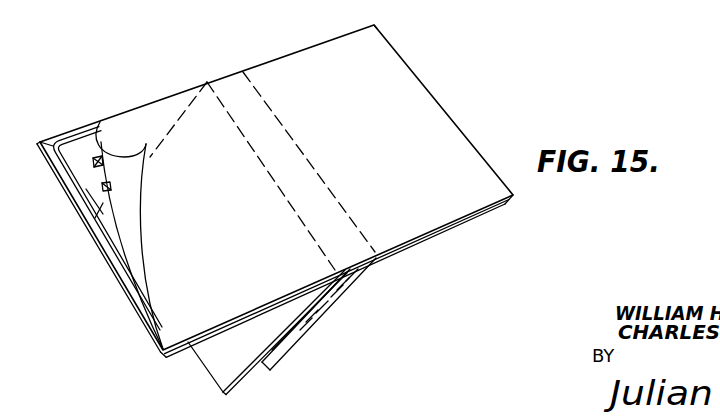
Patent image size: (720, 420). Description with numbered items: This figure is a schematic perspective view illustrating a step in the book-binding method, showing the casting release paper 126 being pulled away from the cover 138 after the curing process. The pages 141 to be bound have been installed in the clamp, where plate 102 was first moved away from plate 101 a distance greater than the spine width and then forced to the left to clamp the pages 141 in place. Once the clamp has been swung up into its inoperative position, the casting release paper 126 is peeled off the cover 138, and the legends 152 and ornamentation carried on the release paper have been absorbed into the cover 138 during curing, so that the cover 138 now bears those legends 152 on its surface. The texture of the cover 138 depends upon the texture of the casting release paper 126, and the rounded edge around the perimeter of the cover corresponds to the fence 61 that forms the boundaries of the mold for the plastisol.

The plate 102 is at (420, 240).
The plate 101 is at (53, 146).
The fence 61 is at (78, 134).
The casting release paper 126 is at (128, 185).
The legends 152 is at (93, 164).
The cover 138 is at (100, 205).
The pages 141 is at (326, 310).